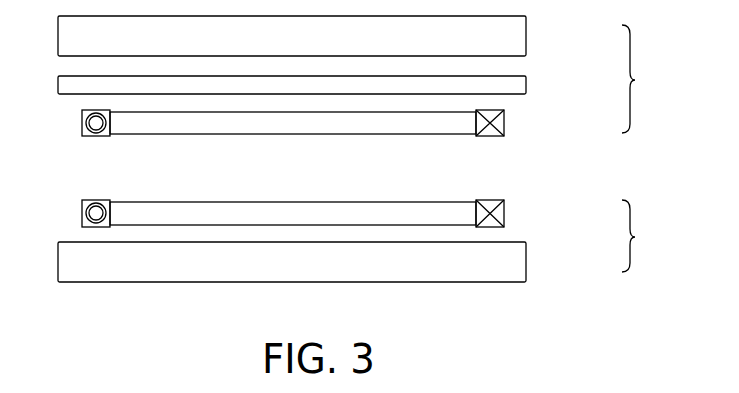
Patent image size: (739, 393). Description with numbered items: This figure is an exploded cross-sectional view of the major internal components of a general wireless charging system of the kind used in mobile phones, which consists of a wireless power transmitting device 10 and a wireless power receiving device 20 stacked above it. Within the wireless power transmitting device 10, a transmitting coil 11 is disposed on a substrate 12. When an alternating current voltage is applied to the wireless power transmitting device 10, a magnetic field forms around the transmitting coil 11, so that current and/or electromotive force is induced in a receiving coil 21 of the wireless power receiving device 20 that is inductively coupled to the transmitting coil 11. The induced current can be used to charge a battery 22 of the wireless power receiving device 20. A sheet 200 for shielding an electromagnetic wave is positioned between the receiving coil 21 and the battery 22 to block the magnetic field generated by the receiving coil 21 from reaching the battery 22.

The wireless power transmitting device 10 is at (645, 236).
The transmitting coil 11 is at (504, 209).
The substrate 12 is at (526, 258).
The wireless power receiving device 20 is at (645, 79).
The receiving coil 21 is at (504, 120).
The battery 22 is at (526, 33).
The sheet for shielding an electromagnetic wave 200 is at (526, 82).